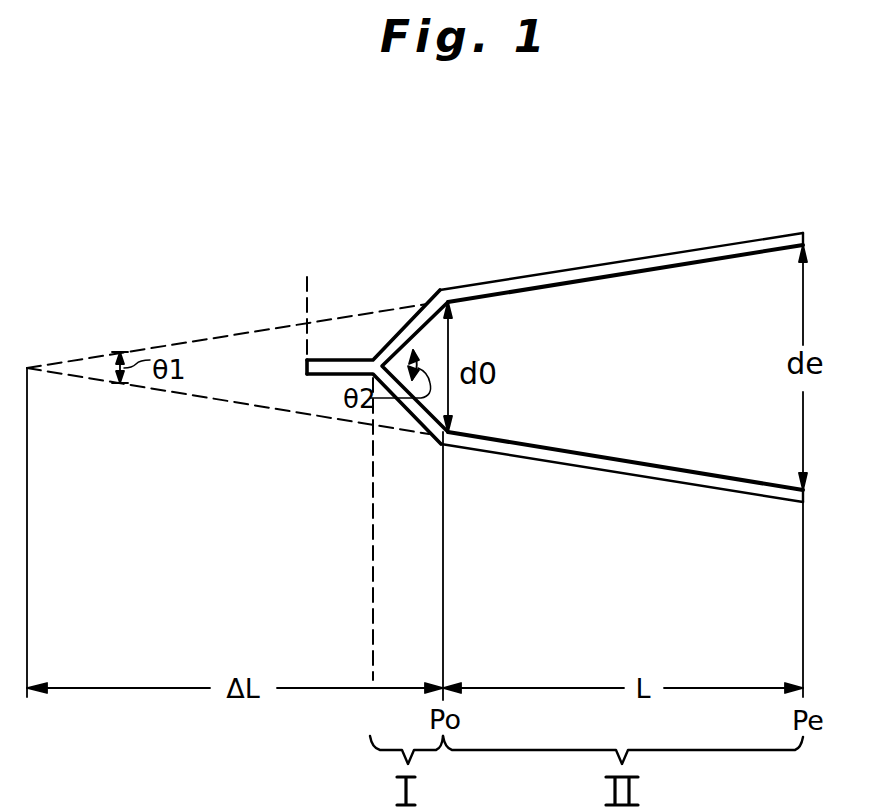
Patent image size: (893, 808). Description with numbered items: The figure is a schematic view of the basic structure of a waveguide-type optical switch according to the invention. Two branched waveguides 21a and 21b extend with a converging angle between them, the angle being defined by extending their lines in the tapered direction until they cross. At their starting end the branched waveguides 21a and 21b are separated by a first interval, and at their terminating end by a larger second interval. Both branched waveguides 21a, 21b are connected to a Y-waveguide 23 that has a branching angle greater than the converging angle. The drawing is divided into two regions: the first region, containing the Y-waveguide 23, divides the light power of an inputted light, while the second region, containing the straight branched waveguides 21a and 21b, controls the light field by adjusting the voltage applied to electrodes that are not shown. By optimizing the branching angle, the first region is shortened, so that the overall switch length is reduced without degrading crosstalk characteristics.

The branched waveguide 21a is at (445, 268).
The branched waveguide 21b is at (444, 452).
The Y-waveguide 23 is at (307, 303).